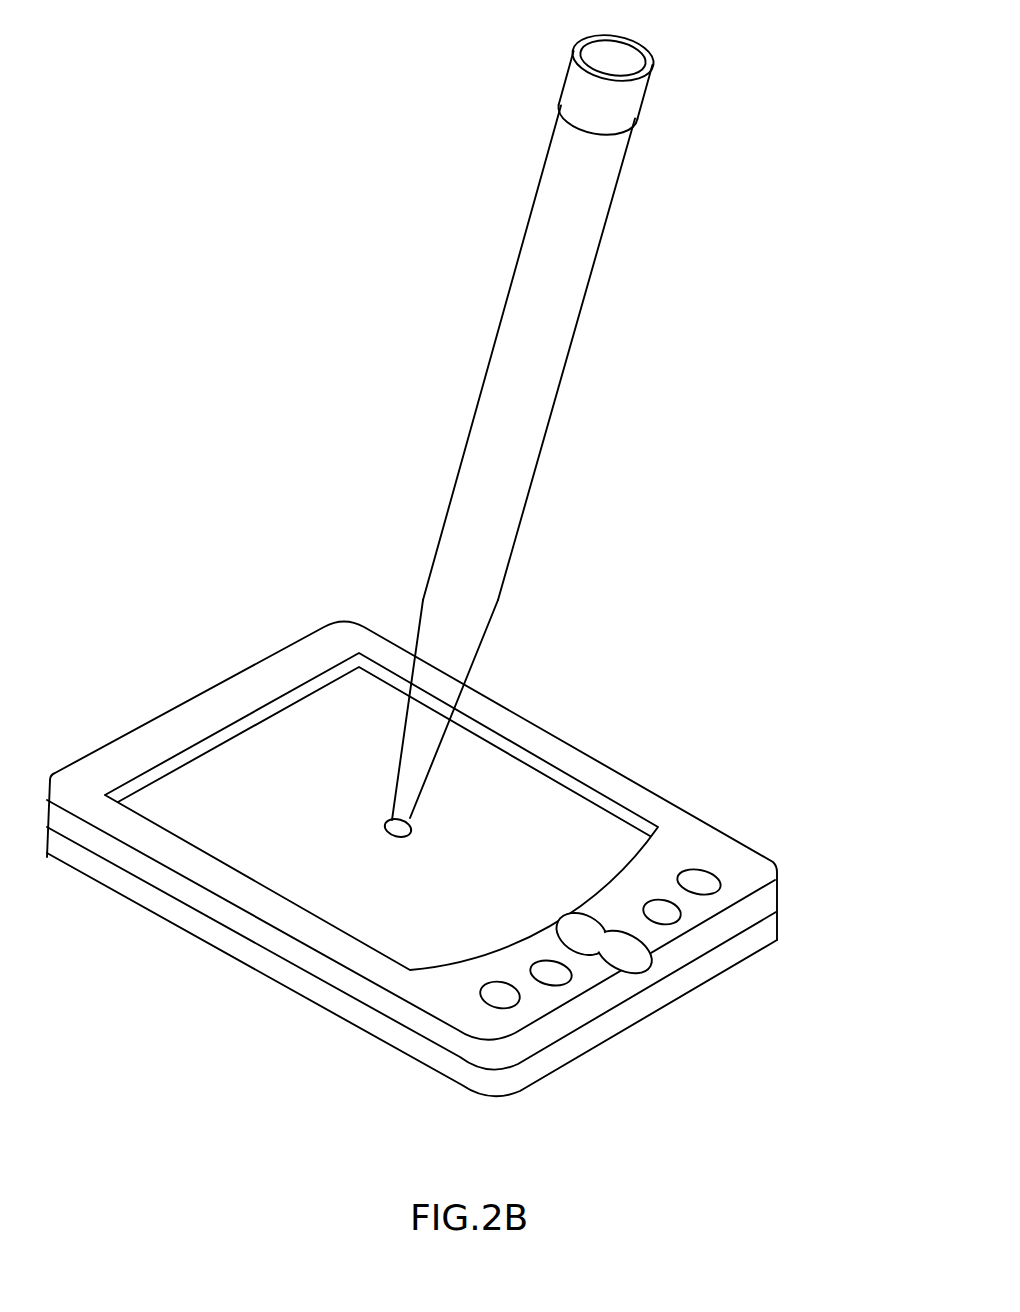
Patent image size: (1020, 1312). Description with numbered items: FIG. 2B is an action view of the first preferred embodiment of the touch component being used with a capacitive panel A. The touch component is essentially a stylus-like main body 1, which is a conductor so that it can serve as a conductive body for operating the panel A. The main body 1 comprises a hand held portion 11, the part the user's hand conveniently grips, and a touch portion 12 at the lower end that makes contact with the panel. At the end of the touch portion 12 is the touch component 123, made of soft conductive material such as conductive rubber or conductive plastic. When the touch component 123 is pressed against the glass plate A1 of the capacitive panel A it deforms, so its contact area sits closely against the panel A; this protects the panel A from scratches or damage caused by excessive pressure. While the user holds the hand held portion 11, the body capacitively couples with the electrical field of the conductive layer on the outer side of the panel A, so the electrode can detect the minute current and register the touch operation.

The main body 1 is at (544, 439).
The hand held portion 11 is at (525, 372).
The touch portion 12 is at (397, 803).
The touch component 123 is at (385, 826).
The capacitive panel A is at (412, 810).
The glass plate A1 is at (338, 733).